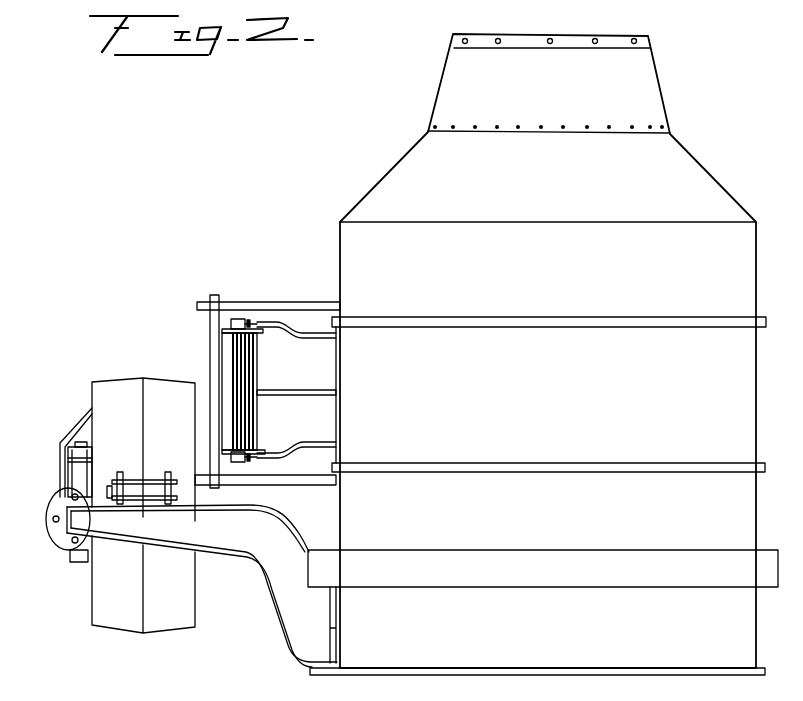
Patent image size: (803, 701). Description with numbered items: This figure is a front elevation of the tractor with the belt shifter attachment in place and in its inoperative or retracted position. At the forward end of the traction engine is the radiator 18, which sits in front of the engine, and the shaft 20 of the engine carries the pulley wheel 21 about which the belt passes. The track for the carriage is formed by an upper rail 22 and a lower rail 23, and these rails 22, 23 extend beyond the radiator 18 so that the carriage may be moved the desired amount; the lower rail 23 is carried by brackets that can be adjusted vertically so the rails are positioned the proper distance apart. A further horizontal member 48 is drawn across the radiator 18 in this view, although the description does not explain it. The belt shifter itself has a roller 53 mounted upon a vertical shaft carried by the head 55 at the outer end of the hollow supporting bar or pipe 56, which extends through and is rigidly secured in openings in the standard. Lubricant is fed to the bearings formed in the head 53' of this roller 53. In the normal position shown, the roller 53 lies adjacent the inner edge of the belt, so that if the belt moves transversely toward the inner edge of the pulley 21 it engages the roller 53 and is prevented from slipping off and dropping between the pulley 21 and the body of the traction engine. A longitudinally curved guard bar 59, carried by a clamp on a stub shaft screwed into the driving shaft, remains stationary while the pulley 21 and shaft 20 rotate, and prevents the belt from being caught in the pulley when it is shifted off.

The radiator 18 is at (543, 354).
The shaft 20 is at (83, 489).
The pulley wheel 21 is at (122, 387).
The upper rail 22 is at (297, 300).
The lower rail 23 is at (328, 478).
The upper band 48 is at (328, 396).
The roller 53 is at (260, 391).
The head of roller 53' is at (280, 379).
The head 55 is at (238, 320).
The hollow supporting bar or pipe 56 is at (308, 340).
The guard bar 59 is at (82, 430).